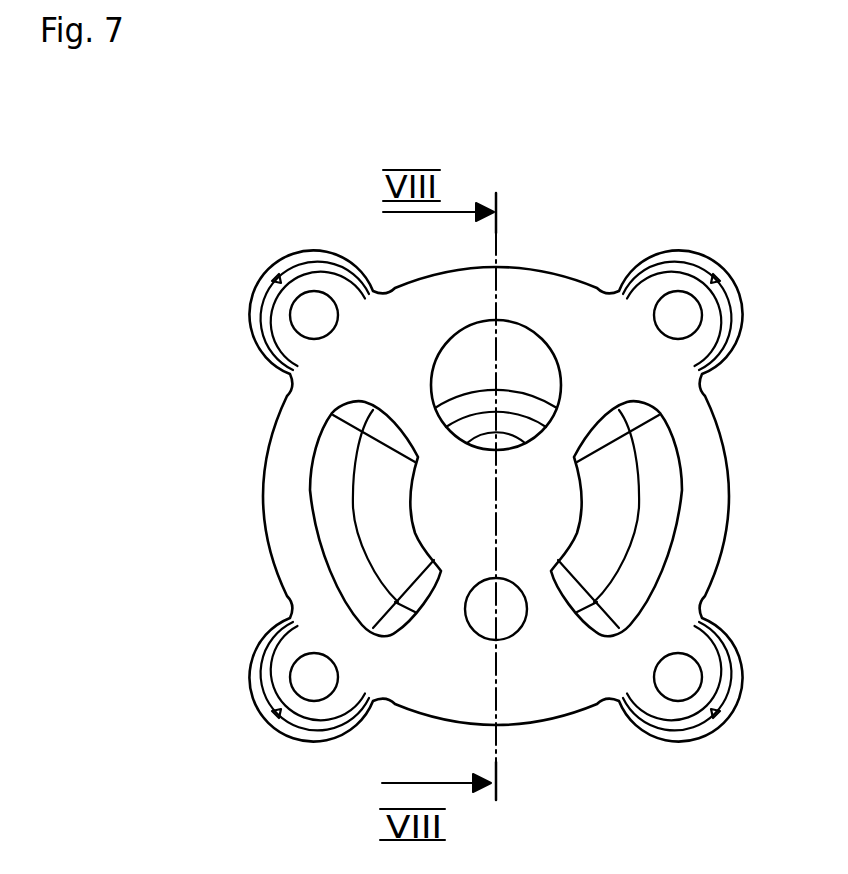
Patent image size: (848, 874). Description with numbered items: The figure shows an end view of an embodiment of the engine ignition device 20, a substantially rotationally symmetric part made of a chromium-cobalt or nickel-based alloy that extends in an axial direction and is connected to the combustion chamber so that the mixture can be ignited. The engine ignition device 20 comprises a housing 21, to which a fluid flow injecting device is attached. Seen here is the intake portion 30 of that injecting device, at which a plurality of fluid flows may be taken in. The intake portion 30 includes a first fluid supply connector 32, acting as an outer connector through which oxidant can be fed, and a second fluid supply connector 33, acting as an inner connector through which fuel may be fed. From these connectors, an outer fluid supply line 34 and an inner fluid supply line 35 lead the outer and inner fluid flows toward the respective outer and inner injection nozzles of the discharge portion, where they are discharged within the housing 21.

The engine ignition device 20 is at (258, 207).
The housing 21 is at (322, 252).
The intake portion 30 is at (292, 450).
The first fluid supply connector 32 is at (373, 503).
The second fluid supply connector 33 is at (507, 338).
The outer fluid supply line 34 is at (507, 518).
The inner fluid supply line 35 is at (520, 347).